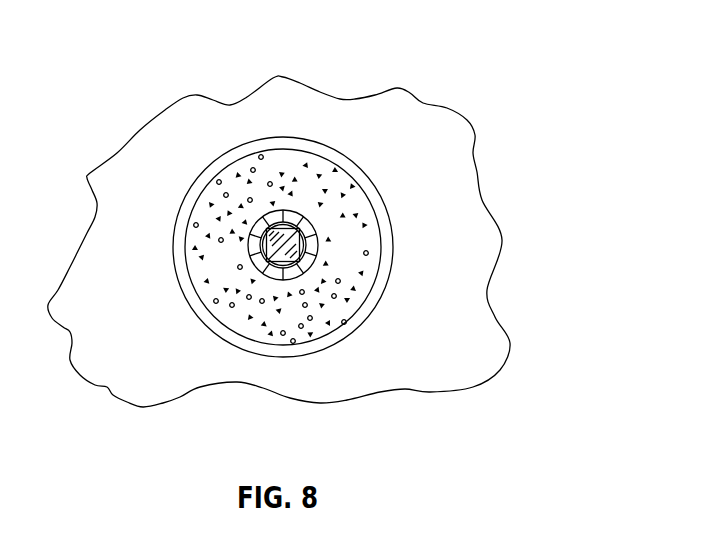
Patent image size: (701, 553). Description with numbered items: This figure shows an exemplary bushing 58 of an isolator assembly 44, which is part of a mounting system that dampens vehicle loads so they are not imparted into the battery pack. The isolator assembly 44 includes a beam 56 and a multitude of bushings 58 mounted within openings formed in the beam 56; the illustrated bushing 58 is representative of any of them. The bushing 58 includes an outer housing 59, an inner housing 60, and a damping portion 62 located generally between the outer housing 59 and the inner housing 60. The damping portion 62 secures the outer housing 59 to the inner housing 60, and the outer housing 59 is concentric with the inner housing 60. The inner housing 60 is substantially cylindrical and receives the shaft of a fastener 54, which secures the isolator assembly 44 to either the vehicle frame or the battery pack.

The isolator assembly 44 is at (476, 55).
The fastener 54 is at (262, 258).
The beam 56 is at (403, 117).
The bushing 58 is at (314, 130).
The outer housing 59 is at (367, 186).
The inner housing 60 is at (289, 281).
The damping portion 62 is at (355, 288).